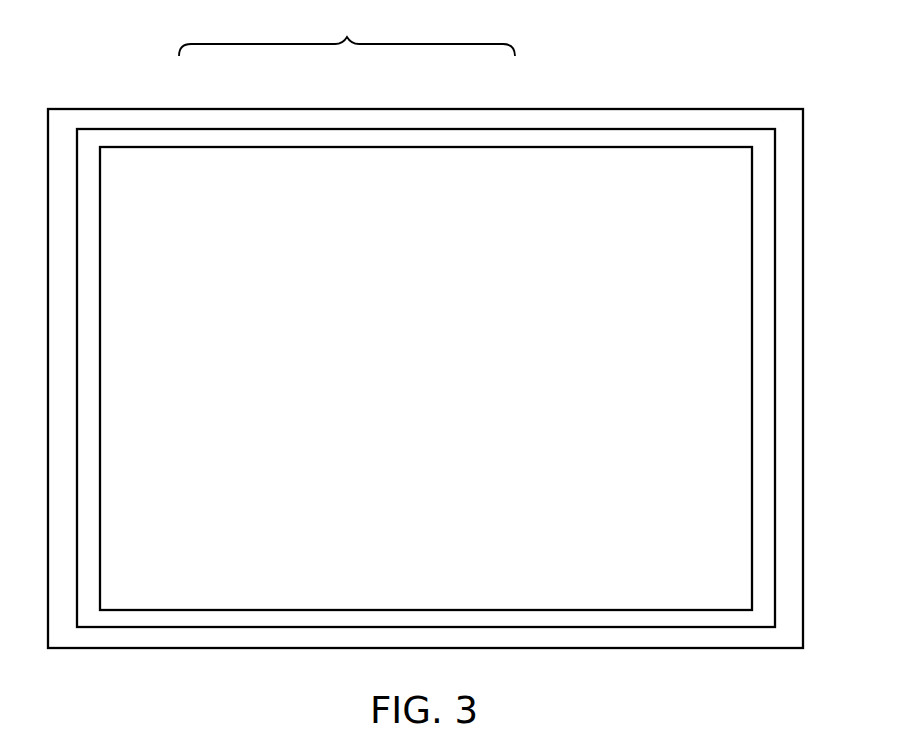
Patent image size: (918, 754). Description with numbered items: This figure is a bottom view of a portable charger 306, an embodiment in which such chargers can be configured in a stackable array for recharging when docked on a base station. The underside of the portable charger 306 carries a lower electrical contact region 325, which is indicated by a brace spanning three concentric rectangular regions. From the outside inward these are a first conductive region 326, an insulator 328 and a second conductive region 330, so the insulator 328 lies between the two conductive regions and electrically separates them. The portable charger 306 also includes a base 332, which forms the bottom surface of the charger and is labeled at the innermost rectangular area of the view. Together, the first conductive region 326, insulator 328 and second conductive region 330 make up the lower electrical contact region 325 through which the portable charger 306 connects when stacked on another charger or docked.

The portable charger 306 is at (656, 85).
The lower electrical contact region 325 is at (347, 32).
The first conductive region 326 is at (200, 116).
The insulator 328 is at (331, 130).
The second conductive region 330 is at (482, 147).
The base 332 is at (736, 258).